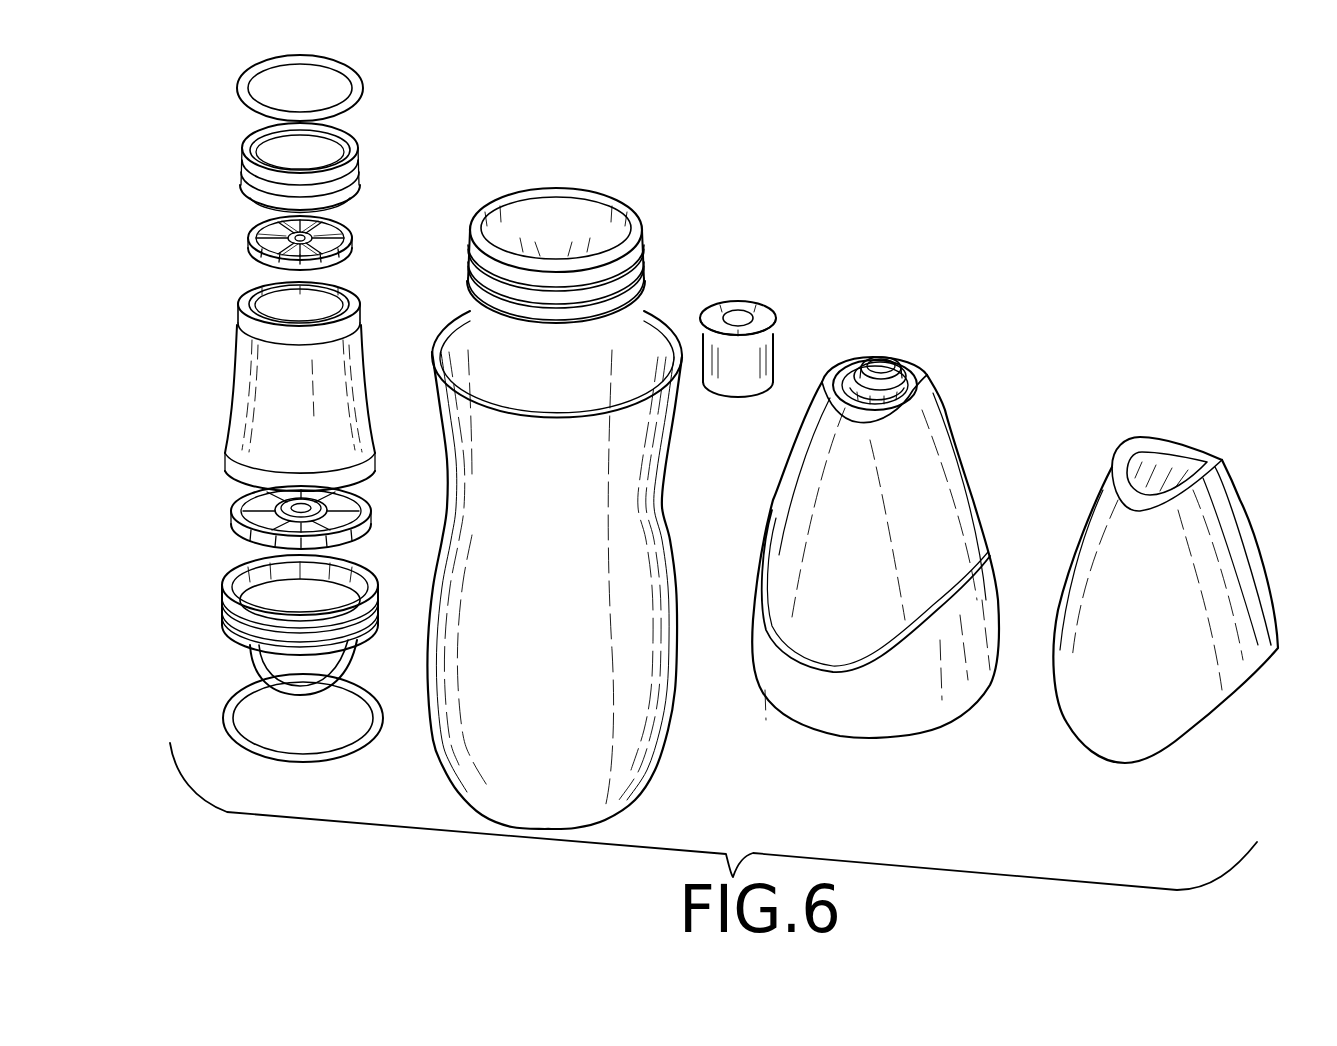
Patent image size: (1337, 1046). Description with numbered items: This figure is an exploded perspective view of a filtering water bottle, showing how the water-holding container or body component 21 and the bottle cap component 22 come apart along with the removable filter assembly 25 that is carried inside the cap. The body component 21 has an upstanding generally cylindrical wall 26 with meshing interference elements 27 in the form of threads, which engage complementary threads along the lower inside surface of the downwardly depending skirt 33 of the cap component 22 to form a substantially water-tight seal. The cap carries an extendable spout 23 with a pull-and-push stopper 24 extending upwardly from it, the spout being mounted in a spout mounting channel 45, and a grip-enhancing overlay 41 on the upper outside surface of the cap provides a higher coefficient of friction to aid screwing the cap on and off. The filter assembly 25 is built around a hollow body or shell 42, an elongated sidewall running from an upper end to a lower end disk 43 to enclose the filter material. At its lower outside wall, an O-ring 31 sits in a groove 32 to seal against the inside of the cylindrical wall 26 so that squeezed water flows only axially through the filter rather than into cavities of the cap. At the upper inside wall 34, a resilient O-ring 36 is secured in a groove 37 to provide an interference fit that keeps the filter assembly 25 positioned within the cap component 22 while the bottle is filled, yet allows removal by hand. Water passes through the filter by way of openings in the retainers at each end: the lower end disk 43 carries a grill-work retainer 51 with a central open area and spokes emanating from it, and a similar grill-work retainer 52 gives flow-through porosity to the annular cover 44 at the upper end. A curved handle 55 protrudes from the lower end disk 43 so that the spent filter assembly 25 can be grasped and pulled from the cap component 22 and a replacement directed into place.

The water-holding container or body component 21 is at (562, 500).
The bottle cap component 22 is at (1022, 424).
The extendable spout 23 is at (770, 310).
The pull-and-push stopper 24 is at (884, 363).
The filter assembly 25 is at (202, 404).
The upstanding generally cylindrical wall 26 is at (452, 300).
The meshing interference elements 27 is at (643, 270).
The O-ring 31 is at (362, 746).
The groove 32 is at (226, 616).
The downwardly depending skirt 33 is at (879, 510).
The upper inside wall 34 is at (360, 142).
The O-ring 36 is at (362, 80).
The groove 37 is at (238, 166).
The grip-enhancing overlay 41 is at (1252, 522).
The hollow body or shell 42 is at (238, 345).
The lower end disk 43 is at (232, 525).
The annular cover 44 is at (250, 234).
The spout mounting channel 45 is at (855, 368).
The grill-work retainer 51 is at (262, 512).
The grill-work retainer 52 is at (335, 232).
The curved handle 55 is at (350, 667).